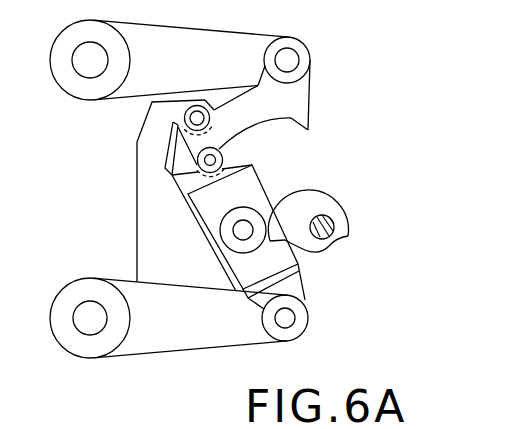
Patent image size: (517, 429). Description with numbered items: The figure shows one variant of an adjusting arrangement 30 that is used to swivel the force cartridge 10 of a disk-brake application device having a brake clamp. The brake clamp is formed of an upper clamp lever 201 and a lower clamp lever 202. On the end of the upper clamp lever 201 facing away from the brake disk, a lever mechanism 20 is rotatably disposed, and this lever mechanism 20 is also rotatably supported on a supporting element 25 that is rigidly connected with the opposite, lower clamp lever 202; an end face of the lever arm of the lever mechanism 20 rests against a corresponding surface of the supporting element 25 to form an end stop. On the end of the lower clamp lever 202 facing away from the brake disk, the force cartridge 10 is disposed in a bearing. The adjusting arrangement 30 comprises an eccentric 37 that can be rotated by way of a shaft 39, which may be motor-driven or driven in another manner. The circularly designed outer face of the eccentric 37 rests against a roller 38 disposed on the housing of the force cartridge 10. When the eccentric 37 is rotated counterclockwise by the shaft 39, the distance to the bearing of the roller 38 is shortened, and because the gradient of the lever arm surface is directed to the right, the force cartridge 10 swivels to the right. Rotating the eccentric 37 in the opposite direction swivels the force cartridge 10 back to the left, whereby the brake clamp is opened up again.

The force cartridge 10 is at (256, 172).
The lever mechanism 20 is at (310, 97).
The supporting element 25 is at (190, 263).
The adjusting arrangement 30 is at (344, 204).
The eccentric 37 is at (313, 187).
The roller 38 is at (258, 244).
The shaft 39 is at (335, 235).
The clamp lever 201 is at (162, 22).
The clamp lever 202 is at (153, 355).